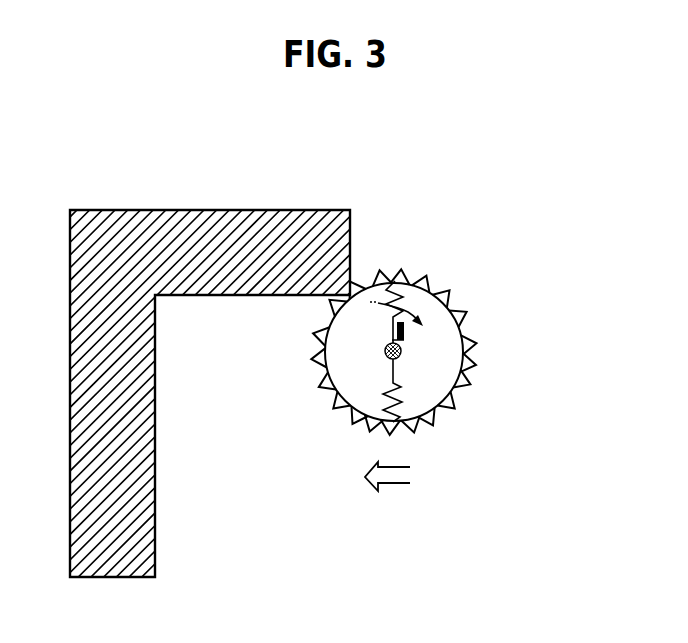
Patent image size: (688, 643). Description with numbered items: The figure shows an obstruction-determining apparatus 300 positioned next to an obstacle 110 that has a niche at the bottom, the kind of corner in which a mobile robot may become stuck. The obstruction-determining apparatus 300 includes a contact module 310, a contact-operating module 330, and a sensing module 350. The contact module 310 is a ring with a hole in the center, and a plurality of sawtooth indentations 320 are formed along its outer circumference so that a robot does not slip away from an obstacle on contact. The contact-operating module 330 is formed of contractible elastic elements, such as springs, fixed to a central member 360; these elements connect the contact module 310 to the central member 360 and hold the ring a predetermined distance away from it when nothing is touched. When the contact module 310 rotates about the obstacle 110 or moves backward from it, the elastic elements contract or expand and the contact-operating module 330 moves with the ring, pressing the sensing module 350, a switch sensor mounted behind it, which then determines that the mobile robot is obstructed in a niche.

The obstacle 110 is at (253, 210).
The obstruction-determining apparatus 300 is at (423, 328).
The contact module 310 is at (462, 362).
The sawtooth indentations 320 is at (467, 313).
The contact-operating module 330 is at (391, 332).
The sensing module 350 is at (404, 339).
The central member 360 is at (387, 360).